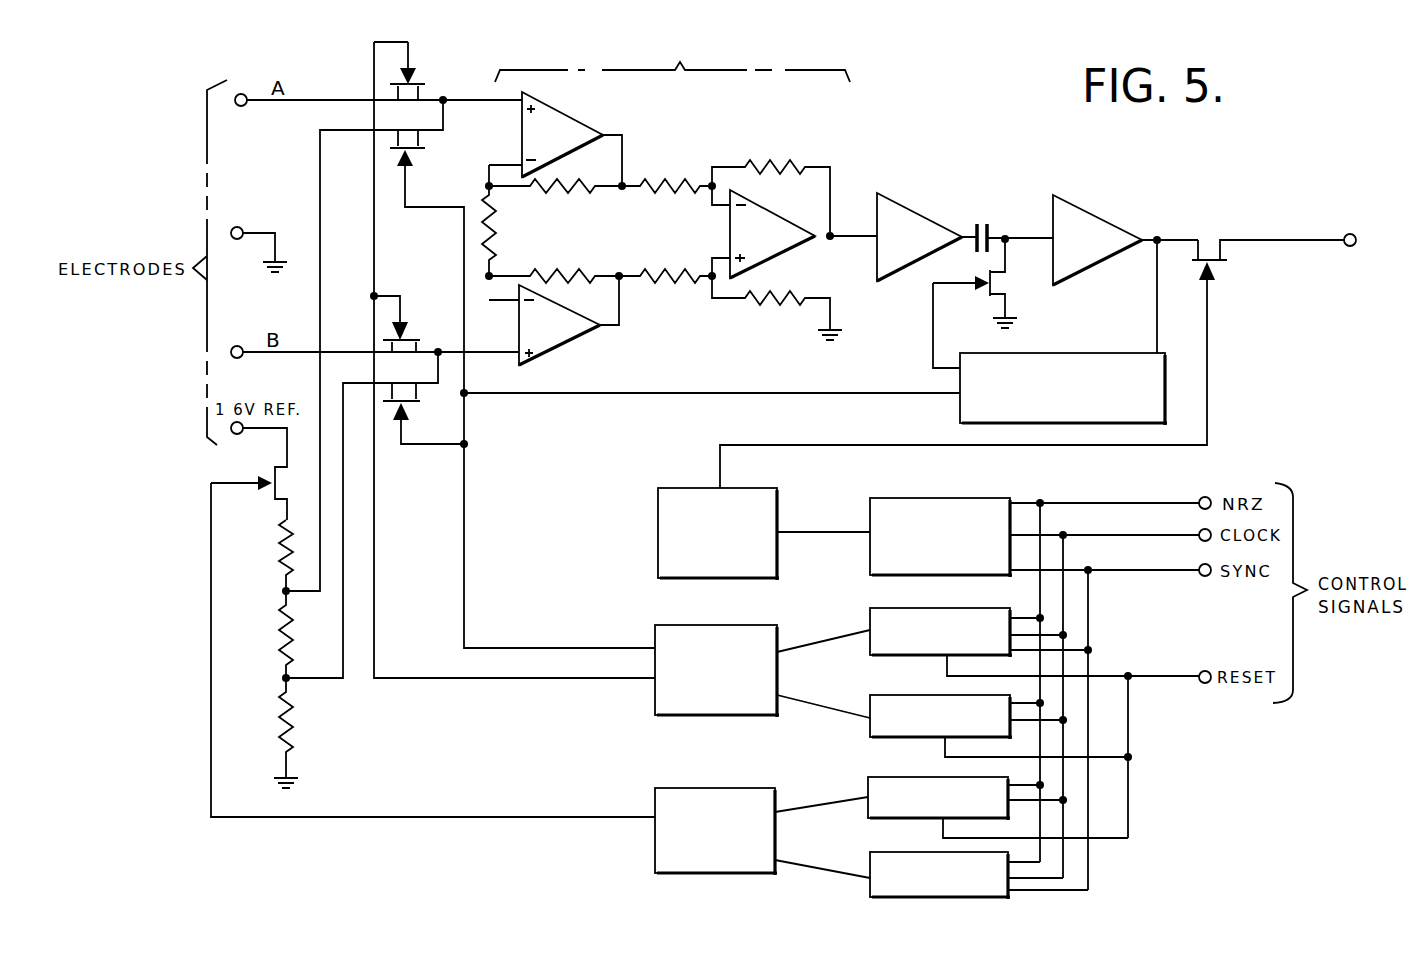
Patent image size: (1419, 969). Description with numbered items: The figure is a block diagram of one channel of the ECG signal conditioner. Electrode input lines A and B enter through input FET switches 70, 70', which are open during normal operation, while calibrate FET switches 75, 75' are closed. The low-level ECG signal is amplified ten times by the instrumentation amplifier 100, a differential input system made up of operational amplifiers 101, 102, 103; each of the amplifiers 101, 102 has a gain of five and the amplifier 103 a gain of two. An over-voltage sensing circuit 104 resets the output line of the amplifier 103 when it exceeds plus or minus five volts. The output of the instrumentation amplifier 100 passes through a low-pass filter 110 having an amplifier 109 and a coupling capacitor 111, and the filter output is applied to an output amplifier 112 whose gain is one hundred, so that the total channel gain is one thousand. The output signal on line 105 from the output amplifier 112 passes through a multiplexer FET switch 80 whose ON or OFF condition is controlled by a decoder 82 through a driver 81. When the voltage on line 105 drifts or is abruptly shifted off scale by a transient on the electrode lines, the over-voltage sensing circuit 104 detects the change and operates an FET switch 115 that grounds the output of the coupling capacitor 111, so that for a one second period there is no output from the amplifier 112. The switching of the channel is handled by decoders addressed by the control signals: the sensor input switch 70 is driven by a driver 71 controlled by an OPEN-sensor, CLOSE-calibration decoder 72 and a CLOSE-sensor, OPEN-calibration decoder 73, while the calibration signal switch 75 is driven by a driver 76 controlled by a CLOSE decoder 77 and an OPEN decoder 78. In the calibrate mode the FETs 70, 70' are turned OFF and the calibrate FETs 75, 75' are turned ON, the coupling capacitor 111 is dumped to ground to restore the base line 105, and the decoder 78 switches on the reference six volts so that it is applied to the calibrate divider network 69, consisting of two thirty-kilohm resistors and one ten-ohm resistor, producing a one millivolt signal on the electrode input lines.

The sensor input switch 70 is at (425, 71).
The calibration signal switch 75 is at (425, 156).
The input FET switch 70' is at (415, 322).
The calibrate FET switch 75' is at (423, 413).
The calibrate divider network 69 is at (276, 633).
The instrumentation amplifier 100 is at (743, 113).
The operational amplifier 101 is at (575, 114).
The operational amplifier 102 is at (577, 333).
The operational amplifier 103 is at (780, 247).
The over-voltage sensing circuit 104 is at (1103, 357).
The output line 105 is at (1180, 240).
The amplifier 109 is at (915, 215).
The low-pass filter 110 is at (961, 205).
The coupling capacitor 111 is at (992, 233).
The output amplifier 112 is at (1088, 220).
The FET switch 115 is at (985, 291).
The multiplexer FET switch 80 is at (1223, 268).
The driver 81 is at (673, 493).
The decoder 82 is at (935, 505).
The driver 71 is at (670, 630).
The OPEN-sensor, CLOSE-calibration decoder 72 is at (888, 612).
The CLOSE-sensor, OPEN-calibration decoder 73 is at (895, 698).
The driver 76 is at (675, 797).
The CLOSE decoder 77 is at (892, 780).
The OPEN decoder 78 is at (877, 883).